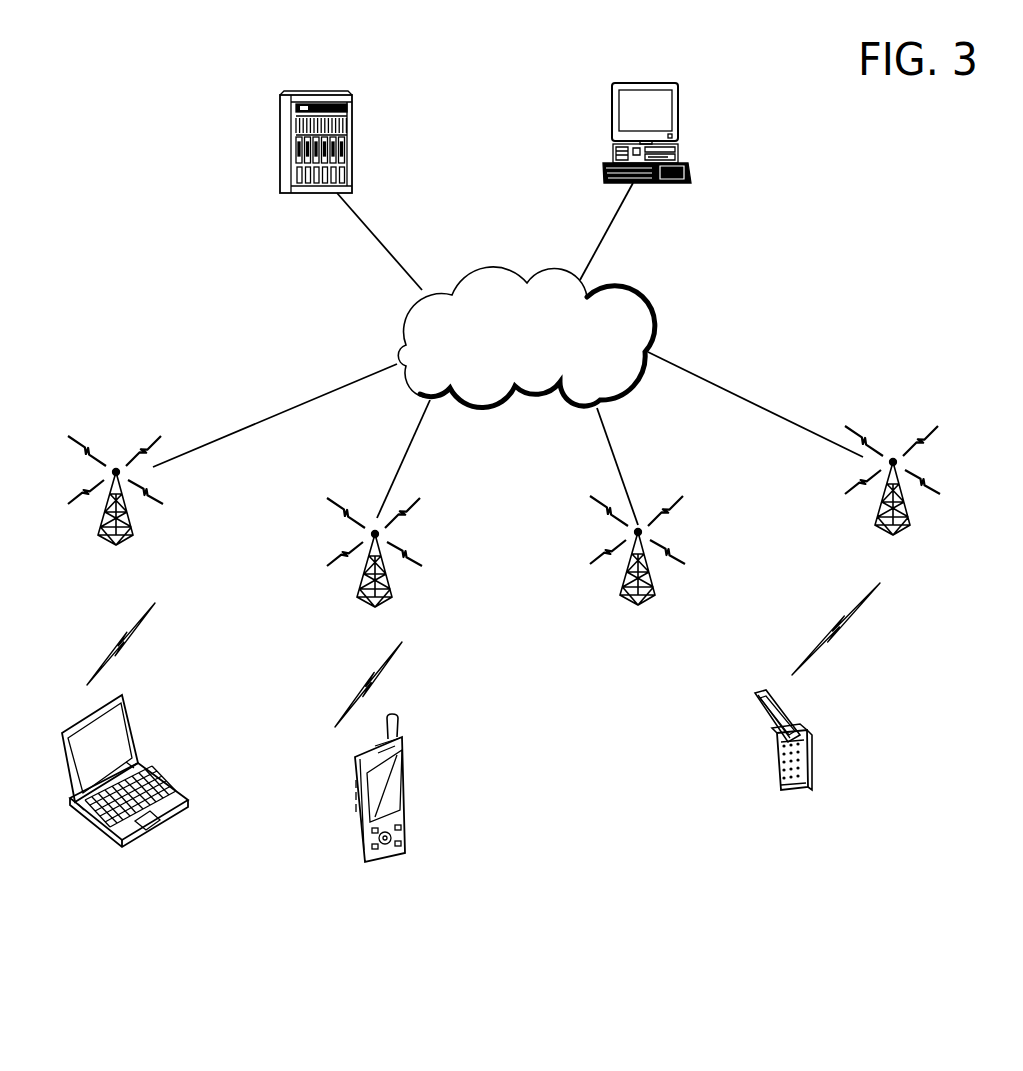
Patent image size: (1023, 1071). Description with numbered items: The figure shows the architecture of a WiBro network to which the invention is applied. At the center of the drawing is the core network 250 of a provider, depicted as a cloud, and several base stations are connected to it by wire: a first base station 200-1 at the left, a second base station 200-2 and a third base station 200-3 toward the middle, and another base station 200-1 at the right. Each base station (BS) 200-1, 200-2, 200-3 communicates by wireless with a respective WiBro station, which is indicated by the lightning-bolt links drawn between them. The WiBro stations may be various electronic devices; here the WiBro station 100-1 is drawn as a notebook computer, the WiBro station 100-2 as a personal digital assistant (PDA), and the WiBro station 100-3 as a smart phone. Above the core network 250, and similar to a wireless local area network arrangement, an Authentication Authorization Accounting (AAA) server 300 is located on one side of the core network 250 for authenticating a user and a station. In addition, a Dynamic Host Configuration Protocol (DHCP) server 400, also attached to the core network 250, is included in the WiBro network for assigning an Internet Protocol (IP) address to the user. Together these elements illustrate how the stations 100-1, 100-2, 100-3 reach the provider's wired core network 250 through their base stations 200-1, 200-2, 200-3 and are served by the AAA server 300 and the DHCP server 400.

The Authentication Authorization Accounting (AAA) server 300 is at (322, 92).
The Dynamic Host Configuration Protocol (DHCP) server 400 is at (645, 82).
The core network 250 is at (636, 293).
The base station (BS) 200-1 is at (133, 527).
The base station (BS) 200-2 is at (392, 587).
The base station (BS) 200-3 is at (655, 585).
The WiBro station 100-1 is at (138, 726).
The WiBro station 100-2 is at (407, 790).
The WiBro station 100-3 is at (813, 762).